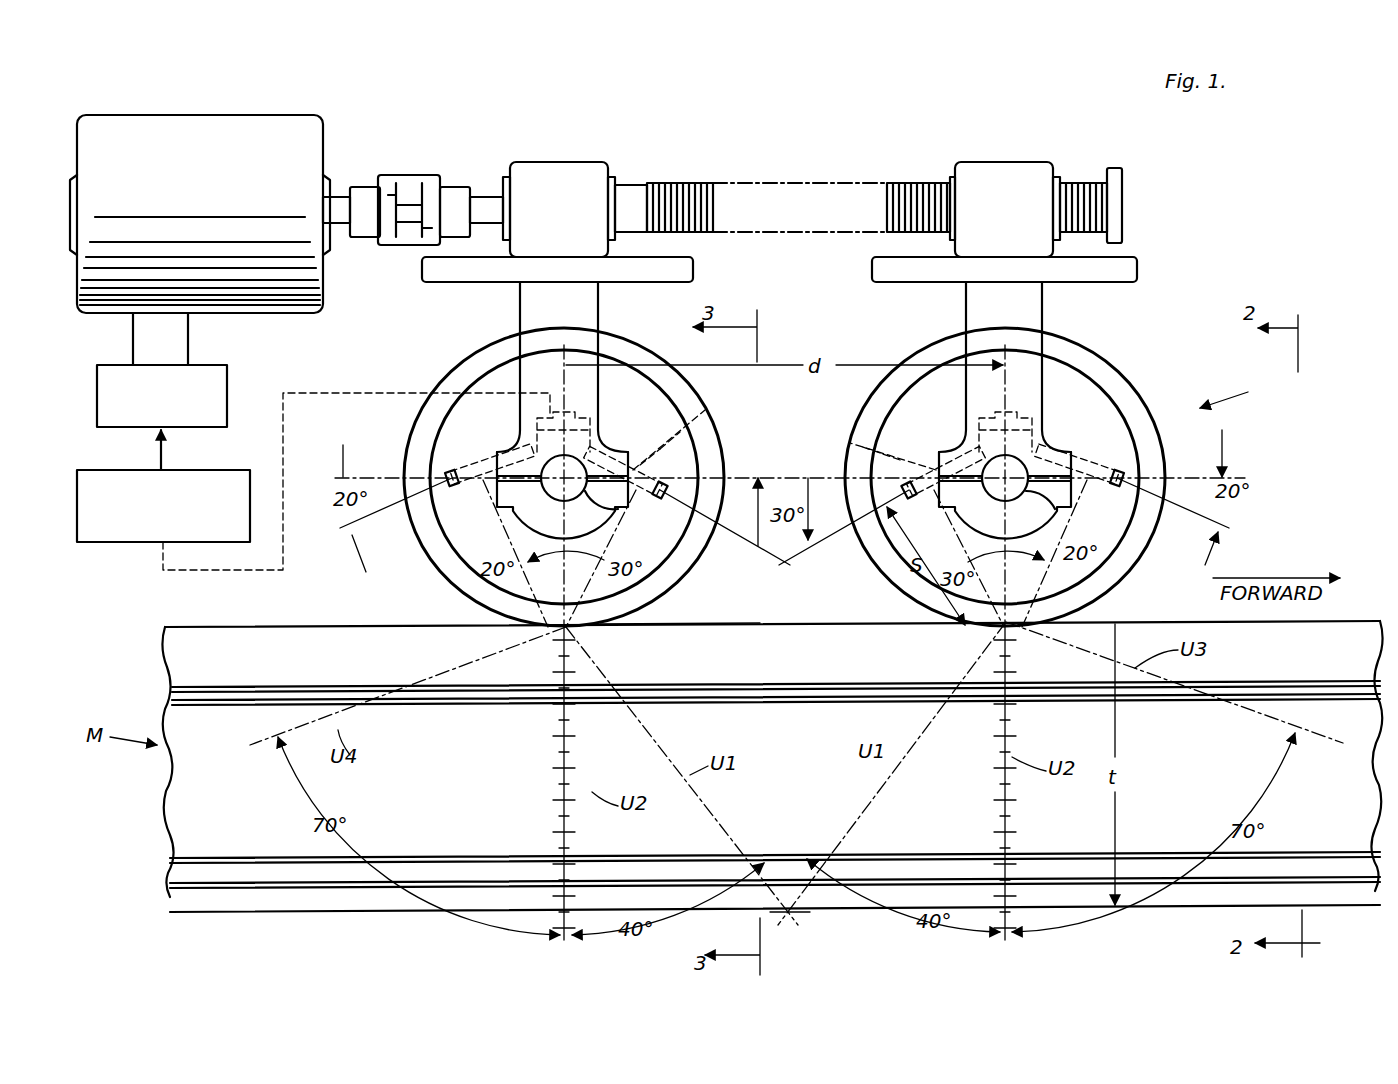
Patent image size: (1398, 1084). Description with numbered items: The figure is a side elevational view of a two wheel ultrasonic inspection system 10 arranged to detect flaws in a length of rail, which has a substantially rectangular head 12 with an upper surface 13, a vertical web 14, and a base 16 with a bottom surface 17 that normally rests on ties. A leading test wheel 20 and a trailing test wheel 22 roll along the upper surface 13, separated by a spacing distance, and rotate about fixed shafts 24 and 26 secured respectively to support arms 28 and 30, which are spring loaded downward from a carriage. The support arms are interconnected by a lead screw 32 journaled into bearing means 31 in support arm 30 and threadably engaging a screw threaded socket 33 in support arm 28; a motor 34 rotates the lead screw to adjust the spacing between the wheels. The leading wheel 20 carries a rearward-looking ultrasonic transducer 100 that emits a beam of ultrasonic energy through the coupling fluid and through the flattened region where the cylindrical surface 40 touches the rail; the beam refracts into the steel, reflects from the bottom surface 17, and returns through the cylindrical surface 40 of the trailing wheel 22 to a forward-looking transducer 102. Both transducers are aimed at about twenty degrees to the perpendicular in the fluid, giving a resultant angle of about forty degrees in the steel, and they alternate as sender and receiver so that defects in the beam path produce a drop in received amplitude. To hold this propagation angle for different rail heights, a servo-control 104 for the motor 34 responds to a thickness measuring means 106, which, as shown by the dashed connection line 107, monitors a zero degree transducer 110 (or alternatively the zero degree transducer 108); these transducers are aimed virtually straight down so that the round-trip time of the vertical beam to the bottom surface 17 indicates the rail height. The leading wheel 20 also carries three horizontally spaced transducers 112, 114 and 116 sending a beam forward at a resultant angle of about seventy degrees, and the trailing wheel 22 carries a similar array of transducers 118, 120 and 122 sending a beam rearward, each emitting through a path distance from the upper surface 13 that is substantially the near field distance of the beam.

The ultrasonic inspection system 10 is at (1233, 387).
The rail head 12 is at (187, 653).
The upper surface 13 is at (772, 622).
The vertical web 14 is at (175, 803).
The base 16 is at (175, 894).
The bottom surface 17 is at (822, 915).
The leading test wheel 20 is at (1150, 382).
The trailing test wheel 22 is at (476, 347).
The fixed shaft 24 is at (1062, 510).
The fixed shaft 26 is at (630, 518).
The support arm 28 is at (1042, 315).
The support arm 30 is at (598, 312).
The bearing means 31 is at (566, 162).
The lead screw 32 is at (697, 183).
The screw threaded socket 33 is at (1005, 162).
The motor 34 is at (222, 115).
The cylindrical surface 40 is at (420, 566).
The rearward-looking ultrasonic transducer 100 is at (1088, 462).
The forward-looking transducer 102 is at (462, 473).
The servo-control 104 is at (227, 390).
The thickness measuring means 106 is at (77, 483).
The dashed connection line 107 is at (345, 393).
The zero degree transducer 108 is at (1042, 425).
The zero degree transducer 110 is at (598, 430).
The transducer 112 is at (842, 449).
The transducer 114 is at (890, 456).
The transducer 116 is at (870, 449).
The transducer 118 is at (704, 412).
The transducer 120 is at (650, 457).
The transducer 122 is at (670, 440).